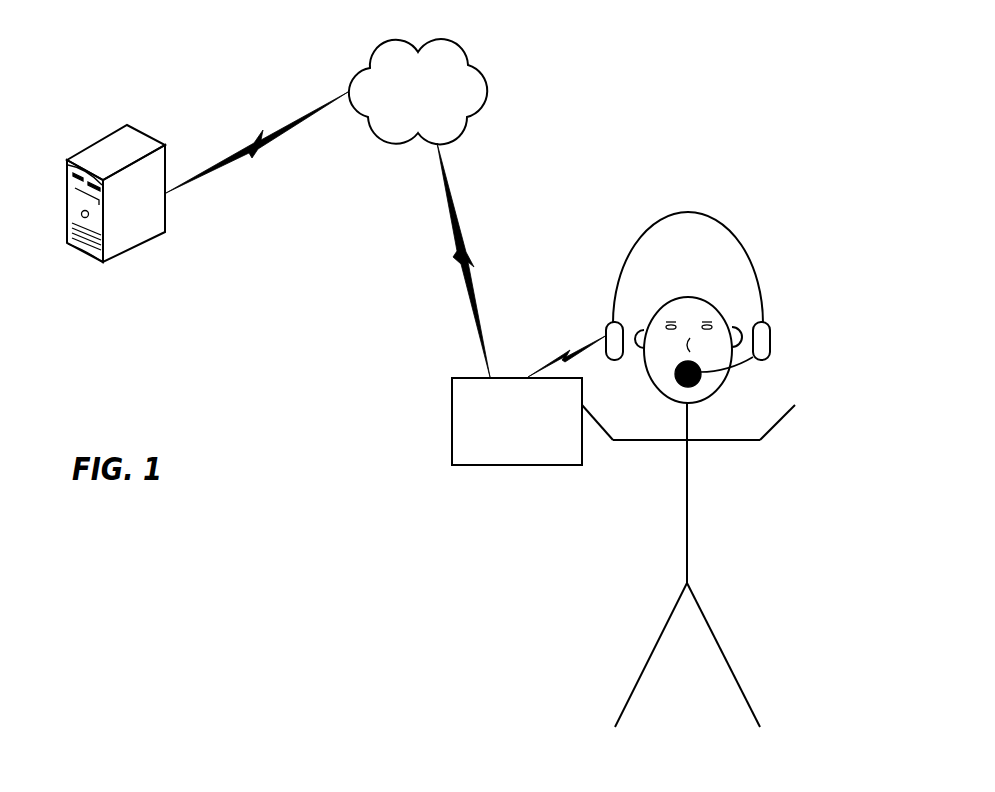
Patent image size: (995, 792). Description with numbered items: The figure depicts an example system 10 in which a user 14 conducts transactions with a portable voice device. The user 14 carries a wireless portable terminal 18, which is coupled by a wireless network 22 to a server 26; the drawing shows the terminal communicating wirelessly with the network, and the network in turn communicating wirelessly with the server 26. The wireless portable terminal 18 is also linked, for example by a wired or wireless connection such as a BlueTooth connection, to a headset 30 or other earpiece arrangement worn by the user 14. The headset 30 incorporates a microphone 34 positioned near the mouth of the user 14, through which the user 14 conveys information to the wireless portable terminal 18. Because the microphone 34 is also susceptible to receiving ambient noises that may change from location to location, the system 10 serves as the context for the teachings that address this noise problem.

The system 10 is at (300, 380).
The user 14 is at (687, 503).
The wireless portable terminal 18 is at (508, 465).
The wireless network 22 is at (437, 37).
The server 26 is at (140, 243).
The headset 30 is at (770, 328).
The microphone 34 is at (695, 388).